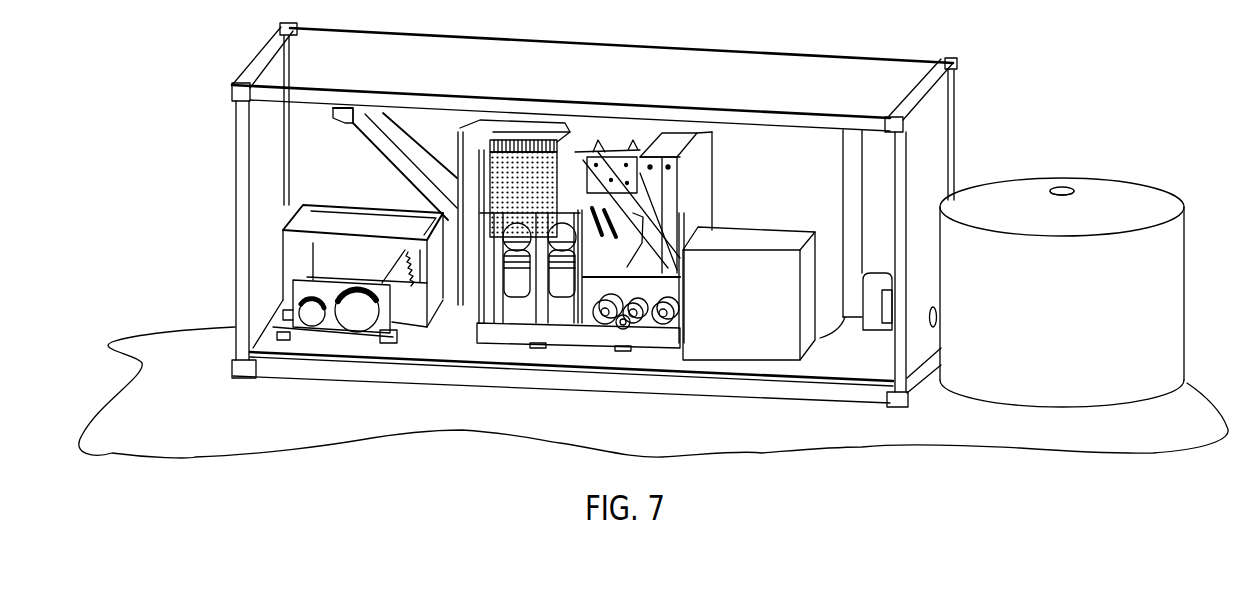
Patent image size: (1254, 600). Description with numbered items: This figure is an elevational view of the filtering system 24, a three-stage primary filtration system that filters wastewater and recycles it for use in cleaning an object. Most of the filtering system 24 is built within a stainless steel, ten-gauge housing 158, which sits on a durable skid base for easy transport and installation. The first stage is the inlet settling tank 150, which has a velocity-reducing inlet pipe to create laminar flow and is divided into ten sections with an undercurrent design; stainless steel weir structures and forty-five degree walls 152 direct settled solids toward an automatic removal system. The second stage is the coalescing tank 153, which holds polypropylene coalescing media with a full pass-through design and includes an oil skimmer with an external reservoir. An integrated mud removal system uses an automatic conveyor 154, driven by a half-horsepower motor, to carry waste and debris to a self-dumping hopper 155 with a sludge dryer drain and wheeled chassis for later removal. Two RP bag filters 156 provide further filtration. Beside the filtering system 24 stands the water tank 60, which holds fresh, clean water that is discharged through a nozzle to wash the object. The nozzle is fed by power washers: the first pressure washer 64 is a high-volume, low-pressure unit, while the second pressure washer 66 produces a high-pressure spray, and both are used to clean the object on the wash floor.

The filtering system 24 is at (628, 135).
The water tank 60 is at (1168, 288).
The first pressure washer 64 is at (293, 317).
The second pressure washer 66 is at (745, 335).
The inlet settling tank 150 is at (670, 182).
The walls 152 is at (643, 218).
The coalescing tank 153 is at (820, 157).
The conveyor 154 is at (383, 136).
The hopper 155 is at (303, 210).
The RP bag filters 156 is at (465, 175).
The housing 158 is at (703, 186).